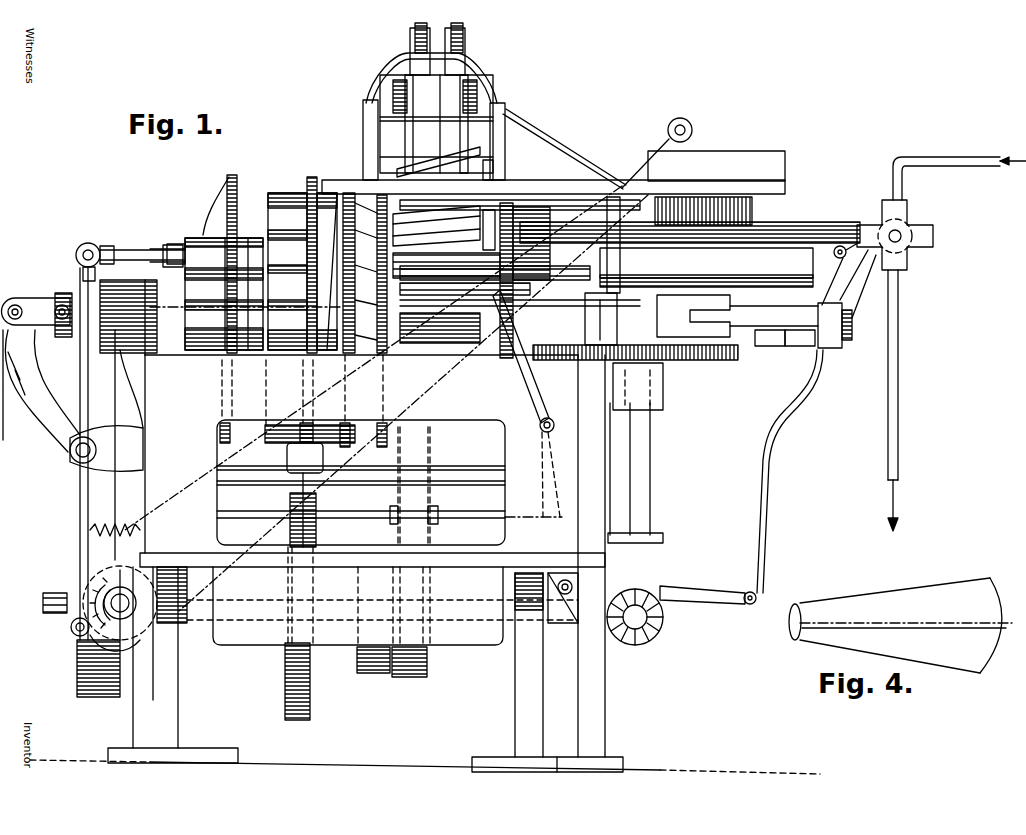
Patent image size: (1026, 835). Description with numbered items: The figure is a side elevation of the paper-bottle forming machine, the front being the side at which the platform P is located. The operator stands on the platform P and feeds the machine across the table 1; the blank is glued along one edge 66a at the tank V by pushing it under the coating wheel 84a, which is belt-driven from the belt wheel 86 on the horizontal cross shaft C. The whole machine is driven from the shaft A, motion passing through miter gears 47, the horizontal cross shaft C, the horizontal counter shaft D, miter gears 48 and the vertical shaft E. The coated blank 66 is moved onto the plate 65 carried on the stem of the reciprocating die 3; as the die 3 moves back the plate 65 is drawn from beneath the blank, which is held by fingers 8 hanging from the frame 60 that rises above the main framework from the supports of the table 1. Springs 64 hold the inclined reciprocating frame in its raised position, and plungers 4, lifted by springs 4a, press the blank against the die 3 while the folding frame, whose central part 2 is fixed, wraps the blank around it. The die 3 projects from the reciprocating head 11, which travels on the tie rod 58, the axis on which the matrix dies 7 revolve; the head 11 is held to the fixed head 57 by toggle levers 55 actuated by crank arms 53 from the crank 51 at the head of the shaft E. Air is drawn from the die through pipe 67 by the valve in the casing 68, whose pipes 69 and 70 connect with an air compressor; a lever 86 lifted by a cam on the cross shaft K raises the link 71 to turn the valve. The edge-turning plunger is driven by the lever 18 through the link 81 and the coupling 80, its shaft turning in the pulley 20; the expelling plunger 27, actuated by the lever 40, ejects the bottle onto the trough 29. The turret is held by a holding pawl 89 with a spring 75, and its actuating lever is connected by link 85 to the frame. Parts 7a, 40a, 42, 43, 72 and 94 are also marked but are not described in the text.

In FIG. 1, the table 1 is at (537, 186).
In FIG. 1, the tank V is at (736, 151).
In FIG. 1, the central part of folding frame 2 is at (491, 177).
In FIG. 1, the die 3 is at (432, 232).
In FIG. 1, the plunger 4 is at (400, 140).
In FIG. 1, the spring 4a is at (407, 98).
In FIG. 1, the matrix die 7 is at (365, 273).
In FIG. 1, the bracket arm 7a is at (362, 265).
In FIG. 1, the finger 8 is at (498, 280).
In FIG. 1, the reciprocating head 11 is at (485, 282).
In FIG. 1, the lever 18 is at (33, 415).
In FIG. 1, the pulley 20 is at (100, 247).
In FIG. 1, the expelling plunger 27 is at (128, 253).
In FIG. 1, the trough 29 is at (836, 245).
In FIG. 1, the lever 40 is at (75, 354).
In FIG. 1, the pivot pin 40a is at (70, 627).
In FIG. 1, the lever arm 42 is at (545, 433).
In FIG. 1, the shaft 43 is at (358, 511).
In FIG. 1, the miter gears 47 is at (140, 645).
In FIG. 1, the miter gears 48 is at (655, 626).
In FIG. 1, the crank 51 is at (627, 300).
In FIG. 1, the crank arm 53 is at (684, 295).
In FIG. 1, the toggle lever 55 is at (753, 320).
In FIG. 1, the fixed head 57 is at (798, 347).
In FIG. 1, the tie rod 58 is at (764, 347).
In FIG. 1, the frame 60 is at (365, 101).
In FIG. 1, the spring 64 is at (412, 34).
In FIG. 1, the plate 65 is at (565, 198).
In FIG. 1, the blank 66 is at (552, 215).
In FIG. 4, the glued edge 66a is at (930, 630).
In FIG. 1, the air pipe 67 is at (792, 226).
In FIG. 1, the valve casing 68 is at (909, 224).
In FIG. 1, the pipe 69 is at (957, 157).
In FIG. 1, the pipe 70 is at (899, 387).
In FIG. 1, the link 71 is at (767, 492).
In FIG. 1, the link 72 is at (852, 255).
In FIG. 1, the spring 75 is at (298, 426).
In FIG. 1, the coupling 80 is at (62, 297).
In FIG. 1, the link 81 is at (55, 305).
In FIG. 1, the coating wheel 84a is at (690, 122).
In FIG. 1, the link 85 is at (193, 489).
In FIG. 1, the lever 86 is at (704, 590).
In FIG. 1, the holding pawl 89 is at (315, 425).
In FIG. 1, the slide 94 is at (318, 529).
In FIG. 1, the vertical shaft E is at (642, 480).
In FIG. 1, the platform P is at (522, 556).
In FIG. 1, the driving shaft A is at (50, 593).
In FIG. 1, the horizontal cross shaft C is at (98, 632).
In FIG. 1, the horizontal counter shaft D is at (529, 665).
In FIG. 1, the cross shaft K is at (636, 646).